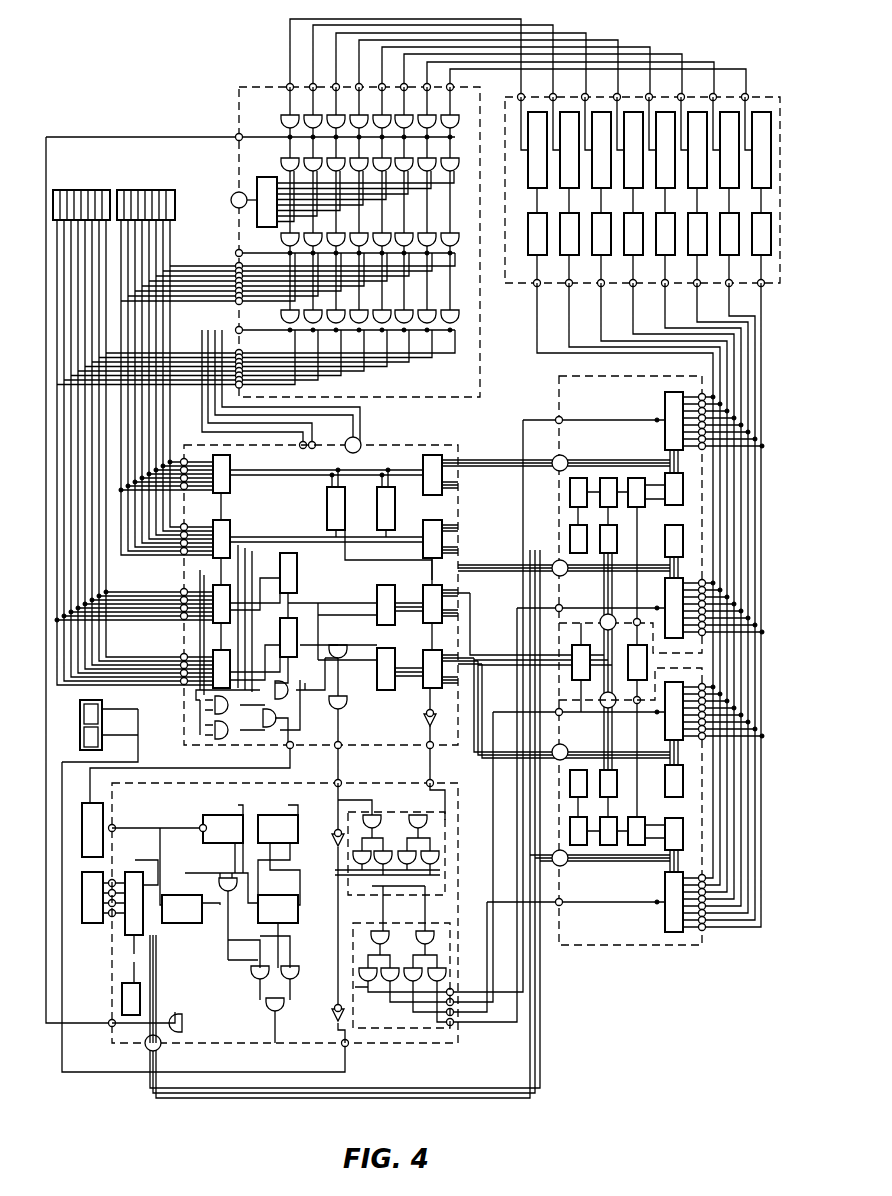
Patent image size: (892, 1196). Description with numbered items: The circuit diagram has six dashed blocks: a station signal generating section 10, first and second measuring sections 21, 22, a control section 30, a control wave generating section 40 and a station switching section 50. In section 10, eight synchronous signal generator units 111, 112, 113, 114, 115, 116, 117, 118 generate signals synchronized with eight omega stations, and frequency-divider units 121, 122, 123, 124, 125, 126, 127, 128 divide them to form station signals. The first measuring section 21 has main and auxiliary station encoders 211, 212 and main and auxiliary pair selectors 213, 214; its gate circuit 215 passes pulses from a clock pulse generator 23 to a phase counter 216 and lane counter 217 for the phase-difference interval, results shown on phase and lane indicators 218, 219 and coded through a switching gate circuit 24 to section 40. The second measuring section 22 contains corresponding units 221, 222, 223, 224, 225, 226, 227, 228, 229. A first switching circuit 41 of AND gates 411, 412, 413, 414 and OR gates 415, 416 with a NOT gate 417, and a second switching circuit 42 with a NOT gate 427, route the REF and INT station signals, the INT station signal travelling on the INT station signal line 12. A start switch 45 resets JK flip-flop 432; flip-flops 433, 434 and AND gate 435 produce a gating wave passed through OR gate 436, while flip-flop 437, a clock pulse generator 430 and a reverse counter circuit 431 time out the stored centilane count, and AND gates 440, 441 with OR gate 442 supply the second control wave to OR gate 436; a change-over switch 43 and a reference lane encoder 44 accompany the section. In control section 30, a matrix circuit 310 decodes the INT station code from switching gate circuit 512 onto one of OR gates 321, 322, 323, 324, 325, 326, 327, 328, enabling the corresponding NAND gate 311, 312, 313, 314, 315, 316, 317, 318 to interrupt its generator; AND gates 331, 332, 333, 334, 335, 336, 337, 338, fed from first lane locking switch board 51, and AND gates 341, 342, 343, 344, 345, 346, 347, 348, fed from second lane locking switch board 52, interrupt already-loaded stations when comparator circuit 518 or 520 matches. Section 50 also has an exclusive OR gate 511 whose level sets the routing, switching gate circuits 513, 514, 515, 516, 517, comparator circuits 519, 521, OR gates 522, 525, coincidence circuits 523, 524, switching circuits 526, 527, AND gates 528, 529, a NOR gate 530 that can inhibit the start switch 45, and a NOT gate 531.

The station signal generating section 10 is at (758, 97).
The INT station signal line 12 is at (366, 783).
The first measuring section 21 is at (608, 375).
The second measuring section 22 is at (621, 949).
The clock pulse generator 23 is at (627, 658).
The switching gate circuit 24 is at (568, 651).
The control section 30 is at (248, 84).
The control wave generating section 40 is at (384, 1043).
The first switching circuit 41 is at (356, 953).
The second switching circuit 42 is at (420, 811).
The change-over switch 43 is at (80, 733).
The reference lane encoder 44 is at (92, 924).
The start switch 45 is at (82, 830).
The station switching section 50 is at (408, 447).
The first lane locking switch board 51 is at (150, 190).
The second lane locking switch board 52 is at (74, 190).
The synchronous signal generator unit 111 is at (755, 188).
The synchronous signal generator unit 112 is at (723, 188).
The synchronous signal generator unit 113 is at (691, 188).
The synchronous signal generator unit 114 is at (659, 188).
The synchronous signal generator unit 115 is at (627, 188).
The synchronous signal generator unit 116 is at (595, 188).
The synchronous signal generator unit 117 is at (563, 188).
The synchronous signal generator unit 118 is at (528, 176).
The frequency-divider unit 121 is at (755, 260).
The frequency-divider unit 122 is at (723, 260).
The frequency-divider unit 123 is at (691, 260).
The frequency-divider unit 124 is at (659, 260).
The frequency-divider unit 125 is at (627, 260).
The frequency-divider unit 126 is at (595, 260).
The frequency-divider unit 127 is at (563, 260).
The frequency-divider unit 128 is at (528, 264).
The main station encoder 211 is at (683, 480).
The auxiliary station encoder 212 is at (684, 531).
The main pair selector 213 is at (665, 403).
The auxiliary pair selector 214 is at (684, 584).
The gate circuit 215 is at (641, 486).
The phase counter 216 is at (612, 486).
The lane counter 217 is at (583, 486).
The phase indicator 218 is at (616, 533).
The lane indicator 219 is at (587, 533).
The main station encoder 221 is at (683, 774).
The auxiliary station encoder 222 is at (690, 818).
The main pair selector 223 is at (664, 686).
The auxiliary pair selector 224 is at (658, 925).
The gate circuit 225 is at (644, 824).
The phase counter 226 is at (616, 824).
The lane counter 227 is at (586, 824).
The phase indicator 228 is at (617, 785).
The lane indicator 229 is at (584, 777).
The matrix circuit 310 is at (262, 180).
The NAND gate 311 is at (453, 118).
The NAND gate 312 is at (431, 116).
The NAND gate 313 is at (408, 116).
The NAND gate 314 is at (386, 116).
The NAND gate 315 is at (363, 116).
The NAND gate 316 is at (340, 116).
The NAND gate 317 is at (317, 116).
The NAND gate 318 is at (287, 119).
The OR gate 321 is at (458, 160).
The OR gate 322 is at (432, 160).
The OR gate 323 is at (410, 160).
The OR gate 324 is at (388, 160).
The OR gate 325 is at (365, 160).
The OR gate 326 is at (342, 160).
The OR gate 327 is at (319, 160).
The OR gate 328 is at (288, 161).
The AND gate 331 is at (460, 232).
The AND gate 332 is at (437, 232).
The AND gate 333 is at (415, 232).
The AND gate 334 is at (391, 232).
The AND gate 335 is at (367, 232).
The AND gate 336 is at (344, 232).
The AND gate 337 is at (319, 232).
The AND gate 338 is at (293, 234).
The AND gate 341 is at (455, 311).
The AND gate 342 is at (431, 311).
The AND gate 343 is at (409, 311).
The AND gate 344 is at (386, 311).
The AND gate 345 is at (363, 311).
The AND gate 346 is at (341, 311).
The AND gate 347 is at (316, 311).
The AND gate 348 is at (281, 315).
The AND gate 411 is at (438, 968).
The AND gate 412 is at (393, 969).
The AND gate 413 is at (416, 969).
The AND gate 414 is at (371, 969).
The OR gate 415 is at (432, 933).
The OR gate 416 is at (387, 937).
The NOT gate 417 is at (330, 1012).
The NOT gate 427 is at (337, 846).
The clock 430 is at (125, 980).
The reverse counter circuit 431 is at (125, 866).
The JK flip-flop circuit 432 is at (211, 843).
The JK flip-flop circuit 433 is at (298, 812).
The JK flip-flop circuit 434 is at (296, 909).
The AND gate 435 is at (204, 901).
The OR gate 436 is at (176, 1016).
The JK flip-flop circuit 437 is at (219, 884).
The AND gate 440 is at (296, 976).
The AND gate 441 is at (256, 980).
The OR gate 442 is at (277, 1012).
The exclusive OR gate 511 is at (345, 709).
The switching gate circuit 512 is at (345, 522).
The switching gate circuit 513 is at (423, 456).
The switching gate circuit 514 is at (442, 517).
The switching gate circuit 515 is at (442, 582).
The switching gate circuit 516 is at (442, 647).
The switching gate circuit 517 is at (395, 494).
The comparator circuit 518 is at (233, 459).
The comparator circuit 519 is at (222, 520).
The comparator circuit 520 is at (230, 590).
The comparator circuit 521 is at (229, 656).
The OR gate 522 is at (289, 685).
The coincidence circuit 523 is at (394, 581).
The coincidence circuit 524 is at (386, 690).
The OR gate 525 is at (344, 658).
The switching circuit 526 is at (286, 593).
The switching circuit 527 is at (297, 652).
The AND gate 528 is at (231, 705).
The AND gate 529 is at (231, 733).
The NOR gate 530 is at (275, 718).
The NOT gate 531 is at (440, 718).